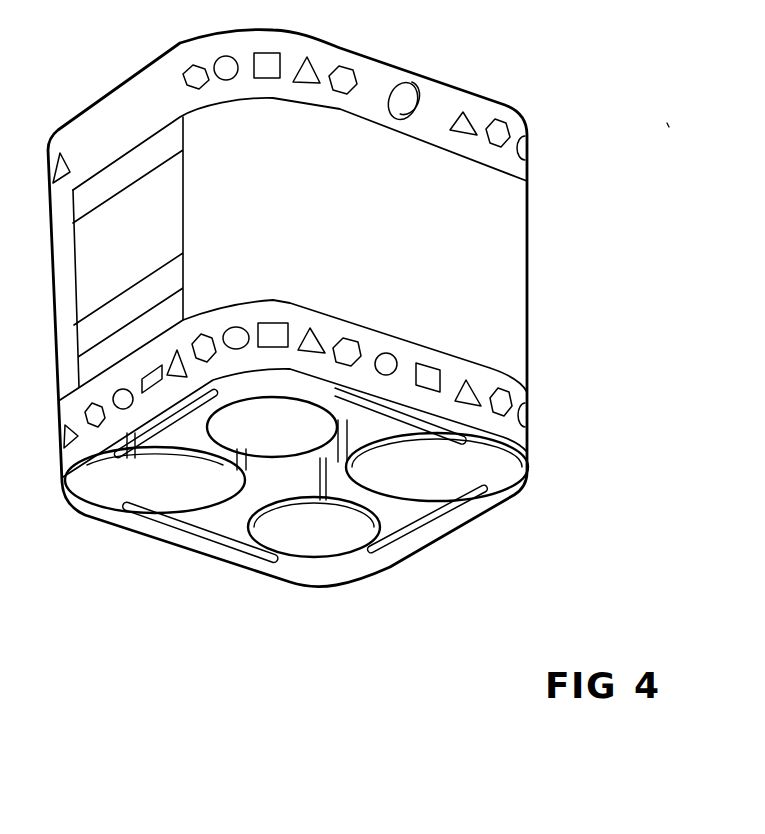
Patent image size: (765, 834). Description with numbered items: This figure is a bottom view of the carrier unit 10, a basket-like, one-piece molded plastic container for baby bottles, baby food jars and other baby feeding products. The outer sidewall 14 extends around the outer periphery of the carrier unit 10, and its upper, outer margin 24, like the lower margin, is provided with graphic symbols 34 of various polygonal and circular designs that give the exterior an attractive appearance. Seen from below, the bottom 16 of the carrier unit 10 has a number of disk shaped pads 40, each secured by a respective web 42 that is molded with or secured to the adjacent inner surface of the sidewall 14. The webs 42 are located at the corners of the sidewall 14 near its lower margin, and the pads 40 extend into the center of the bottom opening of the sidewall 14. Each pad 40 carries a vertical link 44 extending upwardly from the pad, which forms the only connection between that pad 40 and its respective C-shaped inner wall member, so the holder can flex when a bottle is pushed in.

The carrier unit 10 is at (535, 283).
The outer sidewall 14 is at (340, 208).
The bottom 16 is at (301, 410).
The upper outer margin 24 is at (380, 77).
The graphic symbols 34 is at (480, 392).
The disk shaped pad 40 is at (427, 467).
The web 42 is at (500, 468).
The vertical link 44 is at (297, 475).